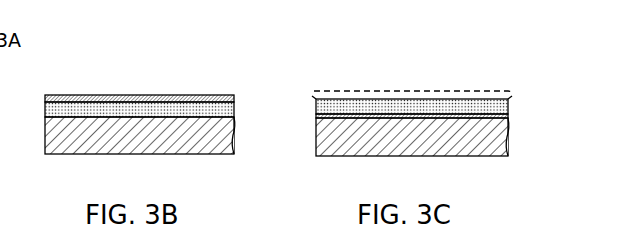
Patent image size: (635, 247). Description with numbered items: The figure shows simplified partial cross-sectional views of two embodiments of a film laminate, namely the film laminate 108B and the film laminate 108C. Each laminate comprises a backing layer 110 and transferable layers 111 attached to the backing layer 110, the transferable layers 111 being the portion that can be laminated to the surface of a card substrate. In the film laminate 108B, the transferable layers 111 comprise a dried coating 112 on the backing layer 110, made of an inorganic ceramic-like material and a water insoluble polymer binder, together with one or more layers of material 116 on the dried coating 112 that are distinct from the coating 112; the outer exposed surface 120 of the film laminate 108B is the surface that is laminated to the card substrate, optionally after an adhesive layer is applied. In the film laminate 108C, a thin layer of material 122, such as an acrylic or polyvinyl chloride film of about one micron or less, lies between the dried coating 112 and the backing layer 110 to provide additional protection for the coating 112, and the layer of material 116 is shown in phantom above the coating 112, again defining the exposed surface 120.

In FIG. 3B, the film laminate 108B is at (194, 56).
In FIG. 3C, the film laminate 108C is at (445, 49).
In FIG. 3B, the backing layer 110 is at (69, 124).
In FIG. 3C, the backing layer 110 is at (323, 128).
In FIG. 3B, the transferable layers 111 is at (123, 109).
In FIG. 3C, the transferable layers 111 is at (387, 92).
In FIG. 3B, the dried coating 112 is at (137, 108).
In FIG. 3C, the dried coating 112 is at (333, 100).
In FIG. 3B, the layer of material 116 is at (193, 98).
In FIG. 3C, the layer of material 116 is at (452, 92).
In FIG. 3B, the exposed surface 120 is at (96, 95).
In FIG. 3C, the exposed surface 120 is at (423, 92).
In FIG. 3C, the layer of material 122 is at (358, 115).